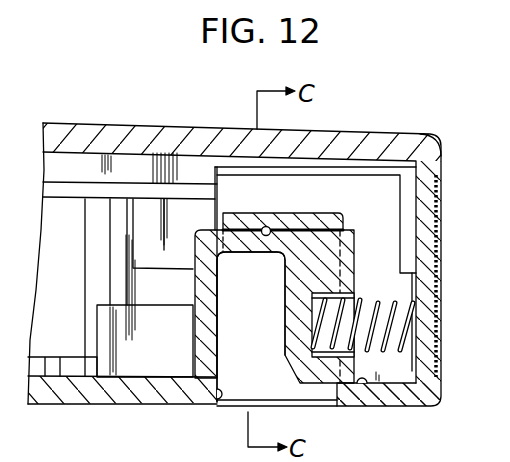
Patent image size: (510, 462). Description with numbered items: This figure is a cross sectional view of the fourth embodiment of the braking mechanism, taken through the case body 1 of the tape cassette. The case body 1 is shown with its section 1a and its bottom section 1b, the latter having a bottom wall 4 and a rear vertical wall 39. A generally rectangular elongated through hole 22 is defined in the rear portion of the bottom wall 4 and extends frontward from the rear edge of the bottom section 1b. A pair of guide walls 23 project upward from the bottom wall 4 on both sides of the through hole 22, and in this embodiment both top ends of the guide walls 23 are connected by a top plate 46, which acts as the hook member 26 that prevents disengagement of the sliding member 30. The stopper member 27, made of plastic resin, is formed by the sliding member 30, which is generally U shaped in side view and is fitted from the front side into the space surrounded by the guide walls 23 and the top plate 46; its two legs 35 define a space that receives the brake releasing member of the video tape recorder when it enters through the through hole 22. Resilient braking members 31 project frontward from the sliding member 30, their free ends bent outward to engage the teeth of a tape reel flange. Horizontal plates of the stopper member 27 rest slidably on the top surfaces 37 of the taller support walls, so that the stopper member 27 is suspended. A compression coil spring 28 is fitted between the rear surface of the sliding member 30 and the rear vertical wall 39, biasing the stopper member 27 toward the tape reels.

The case body 1 is at (398, 133).
The casing upper corner portion 1a is at (437, 159).
The bottom section 1b is at (411, 406).
The bottom wall 4 is at (174, 390).
The through hole 22 is at (227, 405).
The guide walls 23 is at (214, 330).
The hook member 26 is at (264, 226).
The stopper member 27 is at (193, 269).
The coil spring 28 is at (382, 297).
The sliding member 30 is at (300, 262).
The resilient braking members 31 is at (132, 376).
The legs 35 is at (283, 320).
The top surfaces 37 is at (362, 385).
The rear vertical wall 39 is at (418, 348).
The top plate 46 is at (303, 215).